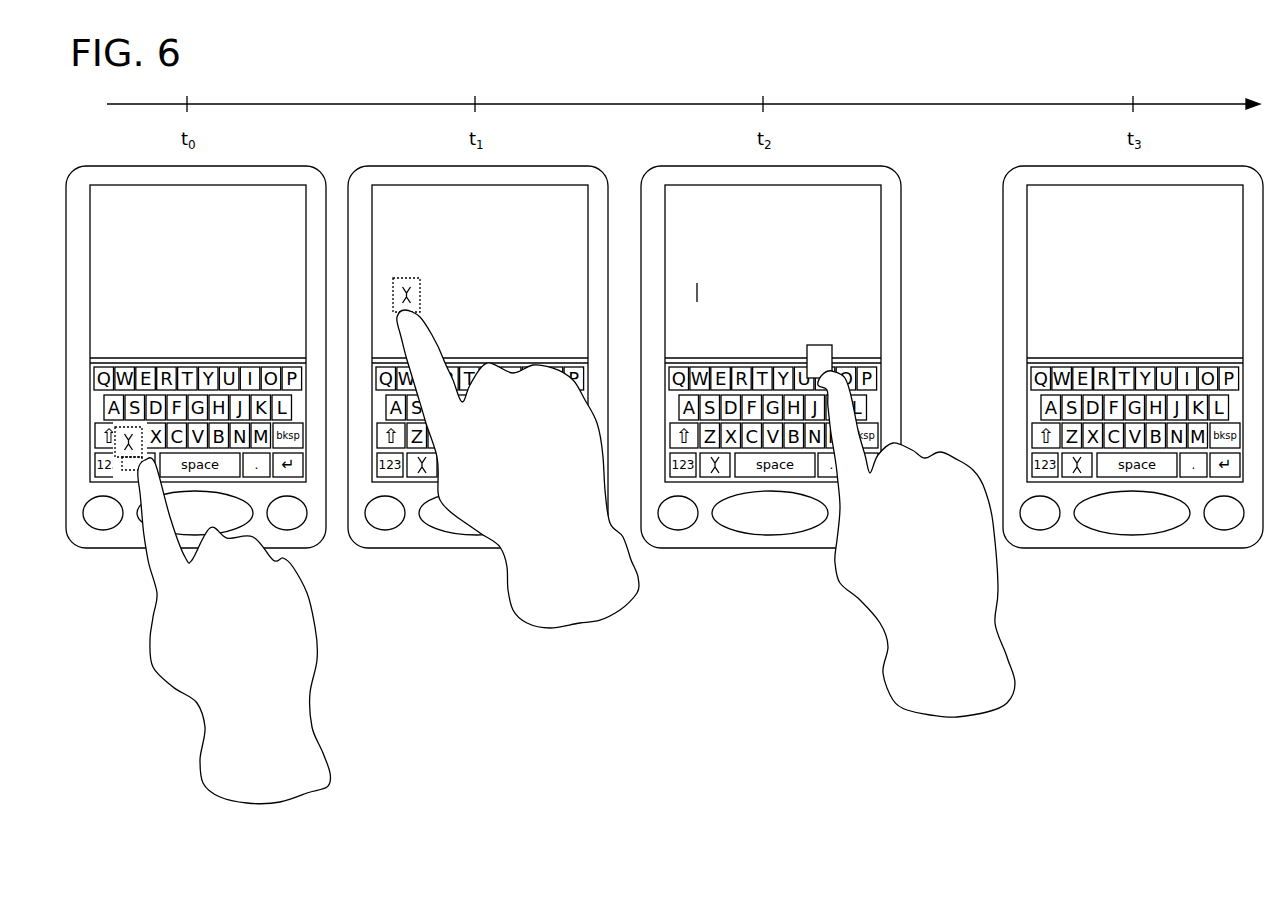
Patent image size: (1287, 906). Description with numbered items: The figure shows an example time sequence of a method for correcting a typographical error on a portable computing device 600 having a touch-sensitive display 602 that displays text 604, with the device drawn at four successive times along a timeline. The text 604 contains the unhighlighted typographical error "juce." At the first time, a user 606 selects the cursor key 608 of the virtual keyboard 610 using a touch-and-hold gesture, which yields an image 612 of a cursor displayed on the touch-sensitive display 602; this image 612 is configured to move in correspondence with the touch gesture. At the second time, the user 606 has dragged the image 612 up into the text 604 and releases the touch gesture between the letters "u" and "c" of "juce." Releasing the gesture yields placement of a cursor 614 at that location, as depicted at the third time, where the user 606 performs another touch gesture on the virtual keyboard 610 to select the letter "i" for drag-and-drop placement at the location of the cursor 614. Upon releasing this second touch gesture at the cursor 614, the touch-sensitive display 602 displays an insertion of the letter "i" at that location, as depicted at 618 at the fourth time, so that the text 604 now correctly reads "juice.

The portable computing device 600 is at (93, 548).
The touch-sensitive display 602 is at (268, 185).
The text 604 is at (193, 239).
The user 606 is at (576, 557).
The cursor key 608 is at (127, 473).
The virtual keyboard 610 is at (151, 356).
The image of a cursor 612 is at (122, 427).
The cursor 614 is at (699, 316).
The insertion of the letter "i" 618 is at (1102, 293).